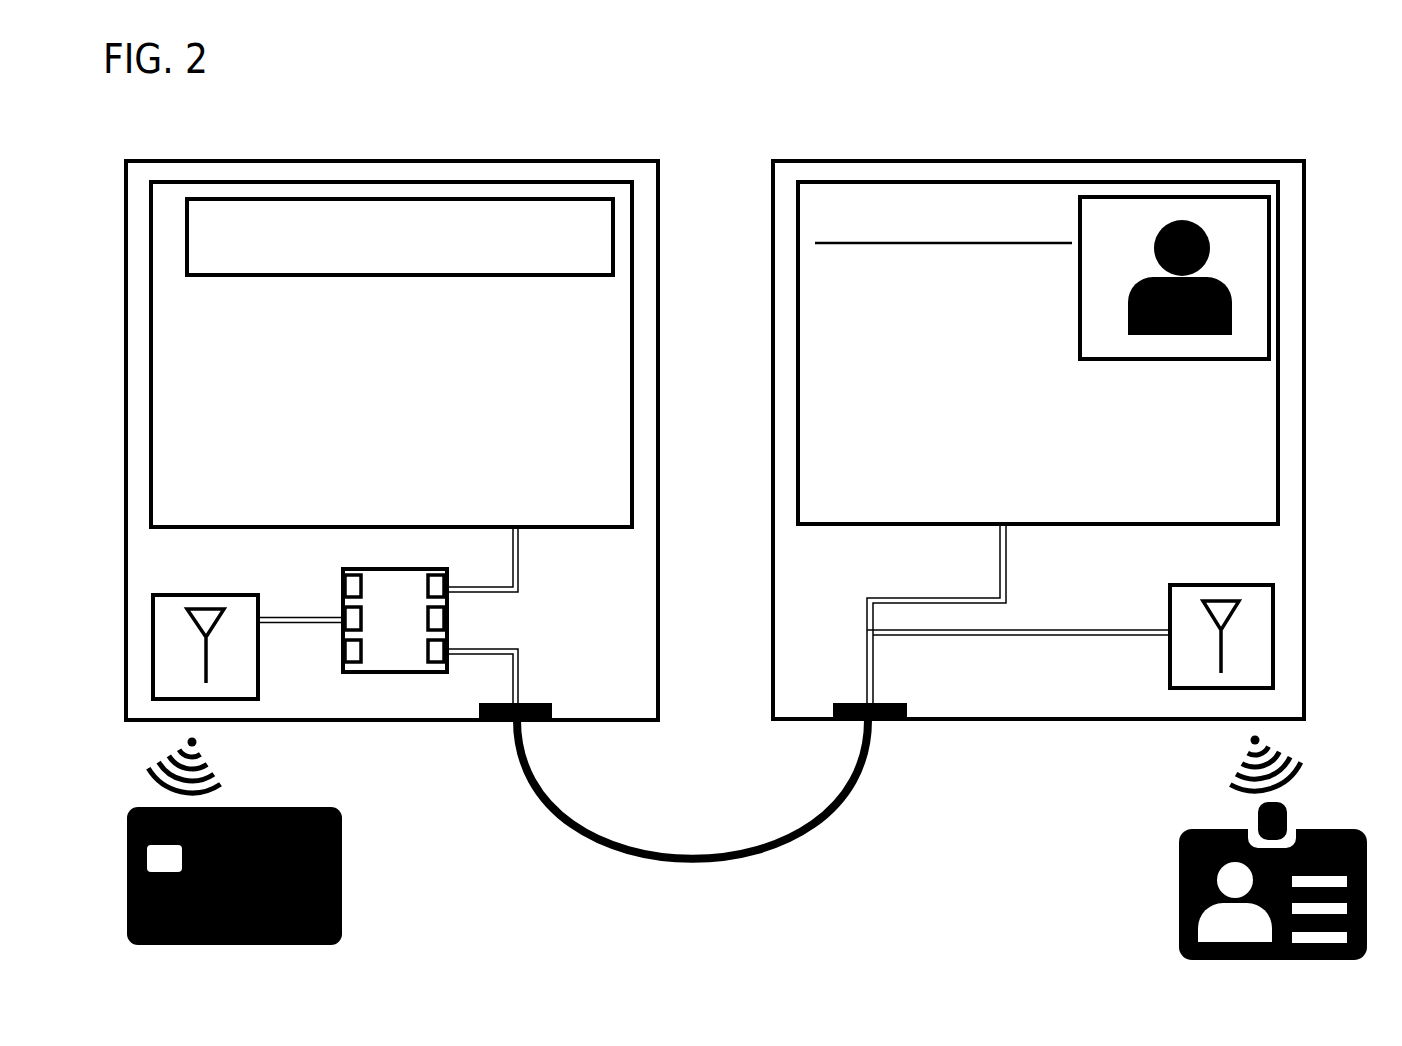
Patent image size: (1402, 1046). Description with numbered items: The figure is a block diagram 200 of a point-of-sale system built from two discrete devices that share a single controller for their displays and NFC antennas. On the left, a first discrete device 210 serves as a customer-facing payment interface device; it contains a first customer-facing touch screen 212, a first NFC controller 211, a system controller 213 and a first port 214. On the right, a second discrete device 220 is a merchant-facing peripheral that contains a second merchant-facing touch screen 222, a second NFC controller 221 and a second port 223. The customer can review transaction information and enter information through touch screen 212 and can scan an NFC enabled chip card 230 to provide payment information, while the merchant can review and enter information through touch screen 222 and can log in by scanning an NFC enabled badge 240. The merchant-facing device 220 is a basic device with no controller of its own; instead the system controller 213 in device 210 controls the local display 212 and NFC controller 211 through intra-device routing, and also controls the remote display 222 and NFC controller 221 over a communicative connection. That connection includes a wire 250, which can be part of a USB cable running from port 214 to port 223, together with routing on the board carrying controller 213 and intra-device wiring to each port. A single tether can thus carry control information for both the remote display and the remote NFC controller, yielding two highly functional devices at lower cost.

The block diagram 200 is at (737, 126).
The first discrete device 210 is at (392, 712).
The first NFC controller 211 is at (206, 595).
The first customer-facing touch screen 212 is at (632, 358).
The system controller 213 is at (417, 636).
The first port 214 is at (533, 703).
The second discrete device 220 is at (1078, 712).
The second NFC controller 221 is at (1225, 585).
The second merchant-facing touch screen 222 is at (799, 438).
The second port 223 is at (858, 703).
The NFC enabled chip card 230 is at (342, 860).
The NFC enabled badge 240 is at (1179, 898).
The wire 250 is at (790, 840).